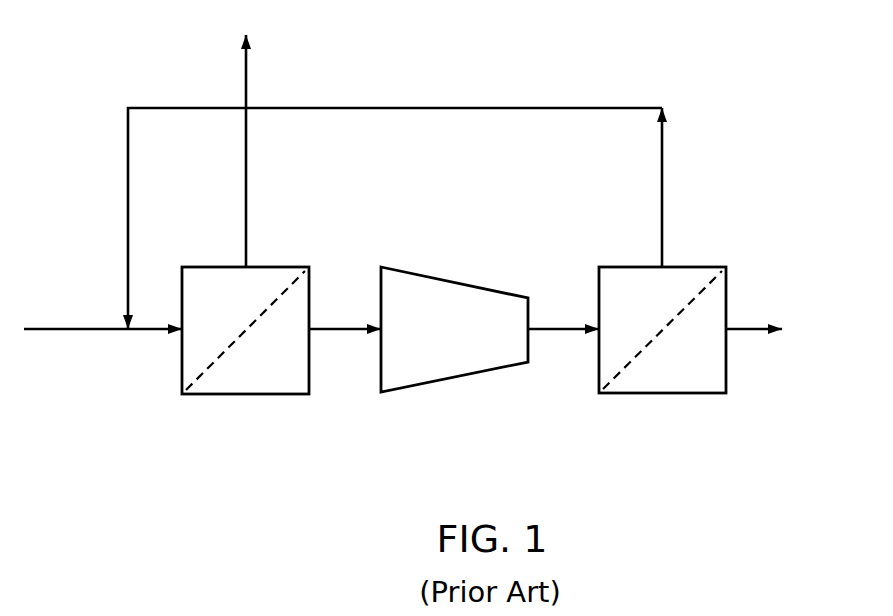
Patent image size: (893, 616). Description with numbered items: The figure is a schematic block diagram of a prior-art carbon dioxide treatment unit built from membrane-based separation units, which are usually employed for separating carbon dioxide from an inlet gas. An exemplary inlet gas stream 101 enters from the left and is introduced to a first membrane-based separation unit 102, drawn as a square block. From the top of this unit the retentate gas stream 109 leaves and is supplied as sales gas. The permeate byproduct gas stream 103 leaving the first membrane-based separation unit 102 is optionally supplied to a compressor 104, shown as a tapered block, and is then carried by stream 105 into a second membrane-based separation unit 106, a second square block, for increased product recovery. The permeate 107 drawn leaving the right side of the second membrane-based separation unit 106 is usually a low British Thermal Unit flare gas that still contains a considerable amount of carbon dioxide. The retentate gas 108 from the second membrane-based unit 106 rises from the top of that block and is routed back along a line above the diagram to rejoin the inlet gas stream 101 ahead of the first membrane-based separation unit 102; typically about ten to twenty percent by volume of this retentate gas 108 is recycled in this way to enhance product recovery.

The inlet gas stream 101 is at (93, 329).
The first membrane-based separation unit 102 is at (268, 267).
The permeate byproduct gas stream 103 is at (345, 329).
The compressor 104 is at (454, 280).
The stream 105 is at (560, 329).
The second membrane-based separation unit 106 is at (688, 267).
The permeate 107 is at (742, 329).
The retentate gas 108 is at (606, 108).
The retentate gas stream 109 is at (247, 80).